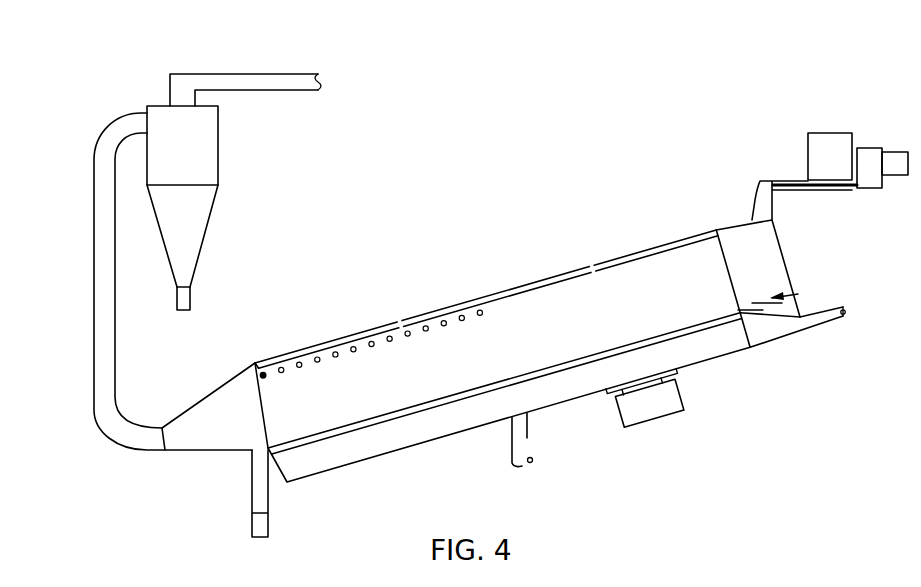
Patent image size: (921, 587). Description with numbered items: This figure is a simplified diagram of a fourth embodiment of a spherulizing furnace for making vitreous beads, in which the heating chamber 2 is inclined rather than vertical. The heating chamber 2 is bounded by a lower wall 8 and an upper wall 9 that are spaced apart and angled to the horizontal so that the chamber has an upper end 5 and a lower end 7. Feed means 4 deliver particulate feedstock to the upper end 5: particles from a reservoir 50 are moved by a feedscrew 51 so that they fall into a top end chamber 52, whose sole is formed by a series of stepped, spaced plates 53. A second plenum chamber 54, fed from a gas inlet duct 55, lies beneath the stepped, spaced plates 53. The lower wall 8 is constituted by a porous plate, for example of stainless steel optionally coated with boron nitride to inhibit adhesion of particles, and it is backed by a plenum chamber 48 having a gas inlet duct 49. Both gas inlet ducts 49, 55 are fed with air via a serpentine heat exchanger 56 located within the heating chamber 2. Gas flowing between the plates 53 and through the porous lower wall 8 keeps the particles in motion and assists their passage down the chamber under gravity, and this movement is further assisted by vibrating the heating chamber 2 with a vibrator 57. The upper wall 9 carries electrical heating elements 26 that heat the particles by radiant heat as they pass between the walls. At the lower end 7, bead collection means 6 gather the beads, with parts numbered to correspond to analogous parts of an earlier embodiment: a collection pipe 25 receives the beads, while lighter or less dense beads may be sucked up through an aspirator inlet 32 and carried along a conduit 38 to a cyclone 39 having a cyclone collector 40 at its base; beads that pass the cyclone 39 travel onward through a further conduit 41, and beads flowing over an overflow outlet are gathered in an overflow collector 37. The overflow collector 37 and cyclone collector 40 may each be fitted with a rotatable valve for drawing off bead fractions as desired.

The heating chamber 2 is at (500, 283).
The feed means 4 is at (789, 159).
The upper end 5 is at (698, 245).
The bead collection means 6 is at (270, 255).
The lower end 7 is at (262, 393).
The lower wall 8 is at (426, 403).
The upper wall 9 is at (444, 309).
The collection pipe 25 is at (203, 437).
The electrical heating elements 26 is at (398, 324).
The aspirator inlet 32 is at (159, 441).
The overflow collector 37 is at (253, 498).
The conduit 38 is at (94, 218).
The cyclone 39 is at (193, 155).
The cyclone collector 40 is at (193, 233).
The further conduit 41 is at (228, 80).
The plenum chamber 48 is at (717, 342).
The gas inlet duct 49 is at (534, 434).
The reservoir 50 is at (833, 140).
The feedscrew 51 is at (829, 187).
The top end chamber 52 is at (765, 276).
The stepped, spaced plates 53 is at (792, 296).
The second plenum chamber 54 is at (780, 327).
The gas inlet duct 55 is at (843, 320).
The serpentine heat exchanger 56 is at (333, 353).
The vibrator 57 is at (645, 412).